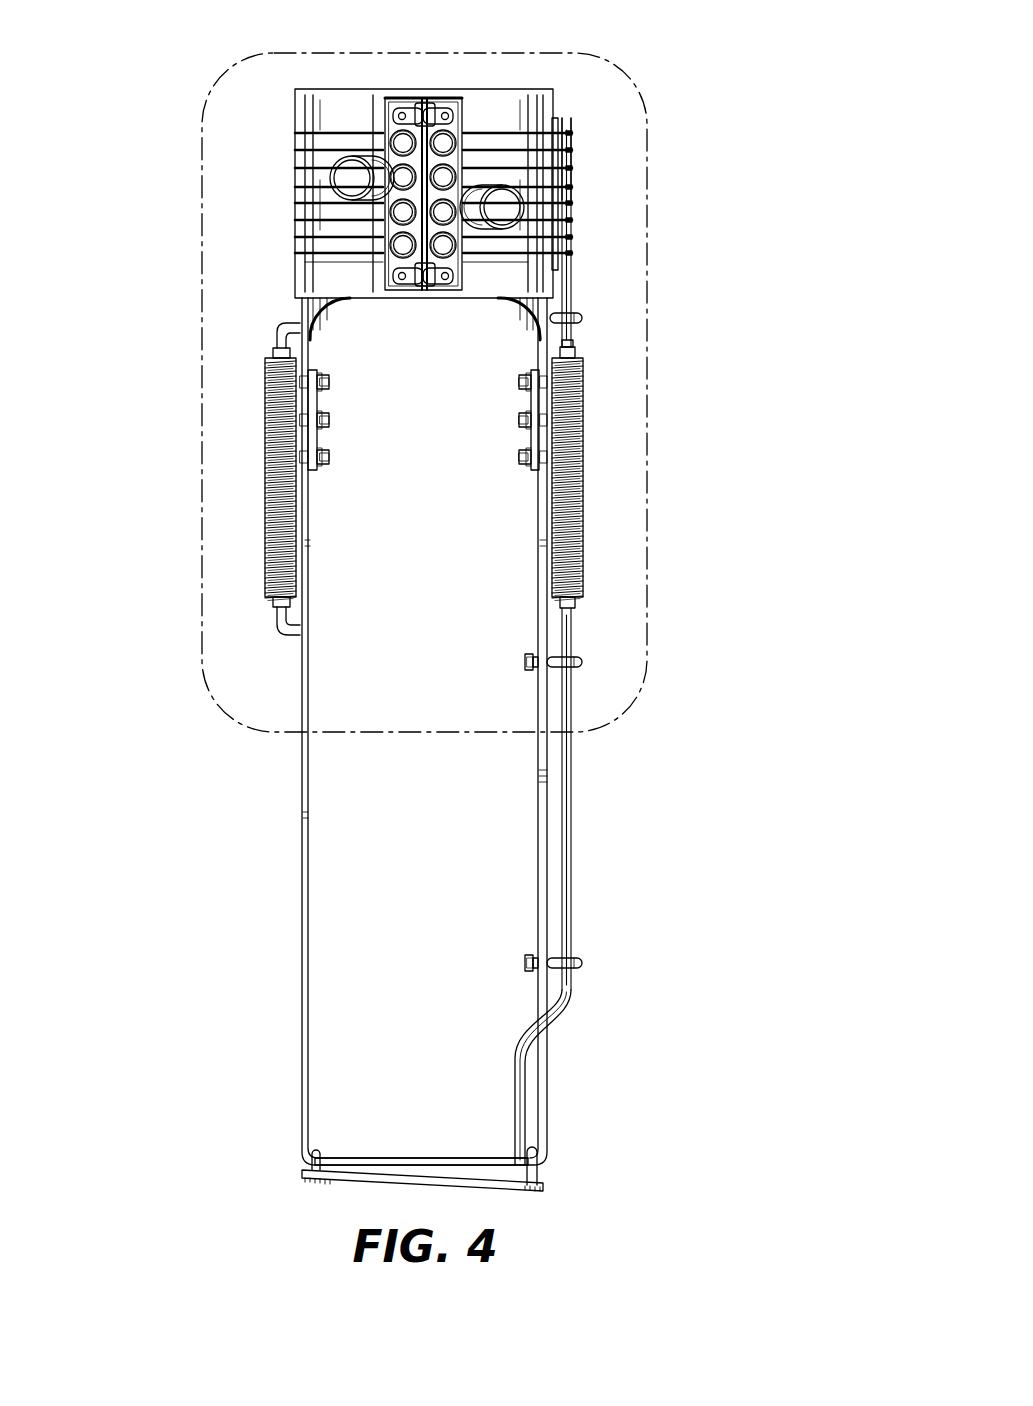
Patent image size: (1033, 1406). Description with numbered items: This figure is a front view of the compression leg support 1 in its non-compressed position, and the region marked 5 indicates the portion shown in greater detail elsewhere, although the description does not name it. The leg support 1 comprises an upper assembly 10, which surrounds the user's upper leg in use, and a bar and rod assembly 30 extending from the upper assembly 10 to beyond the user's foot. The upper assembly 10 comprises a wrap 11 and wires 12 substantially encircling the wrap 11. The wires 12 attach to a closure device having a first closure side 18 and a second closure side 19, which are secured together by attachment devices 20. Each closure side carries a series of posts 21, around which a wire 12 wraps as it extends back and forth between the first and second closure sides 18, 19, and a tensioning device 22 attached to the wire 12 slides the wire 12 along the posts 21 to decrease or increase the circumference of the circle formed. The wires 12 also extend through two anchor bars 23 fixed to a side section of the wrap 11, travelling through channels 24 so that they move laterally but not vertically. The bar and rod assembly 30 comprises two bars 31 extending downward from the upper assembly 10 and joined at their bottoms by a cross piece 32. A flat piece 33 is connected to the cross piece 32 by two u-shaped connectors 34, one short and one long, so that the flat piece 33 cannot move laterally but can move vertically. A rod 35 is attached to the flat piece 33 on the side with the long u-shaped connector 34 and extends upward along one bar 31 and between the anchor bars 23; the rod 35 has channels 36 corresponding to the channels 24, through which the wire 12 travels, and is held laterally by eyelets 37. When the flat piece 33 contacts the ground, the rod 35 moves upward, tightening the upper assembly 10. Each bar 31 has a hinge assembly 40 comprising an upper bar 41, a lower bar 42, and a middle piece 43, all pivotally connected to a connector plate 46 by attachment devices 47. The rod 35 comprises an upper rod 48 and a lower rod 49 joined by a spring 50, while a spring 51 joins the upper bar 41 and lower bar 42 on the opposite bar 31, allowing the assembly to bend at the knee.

The leg support 1 is at (470, 633).
The cartridge housing outline 5 is at (205, 320).
The upper assembly 10 is at (560, 97).
The wrap 11 is at (315, 118).
The wire 12 is at (330, 258).
The first closure side 18 is at (393, 100).
The second closure side 19 is at (452, 100).
The attachment device 20 is at (423, 100).
The post 21 is at (445, 278).
The tensioning device 22 is at (342, 180).
The anchor bar 23 is at (560, 125).
The channel 24 is at (560, 262).
The bar and rod assembly 30 is at (545, 797).
The bar 31 is at (538, 855).
The cross piece 32 is at (437, 1160).
The flat piece 33 is at (505, 1182).
The u-shaped connector 34 is at (320, 1150).
The rod 35 is at (567, 925).
The channel 36 is at (575, 120).
The eyelet 37 is at (582, 318).
The hinge assembly 40 is at (646, 483).
The upper bar 41 is at (305, 352).
The lower bar 42 is at (307, 543).
The middle piece 43 is at (315, 433).
The connector plate 46 is at (315, 398).
The attachment device 47 is at (323, 458).
The upper rod 48 is at (575, 340).
The lower rod 49 is at (567, 822).
The spring 50 is at (582, 520).
The spring 51 is at (270, 520).